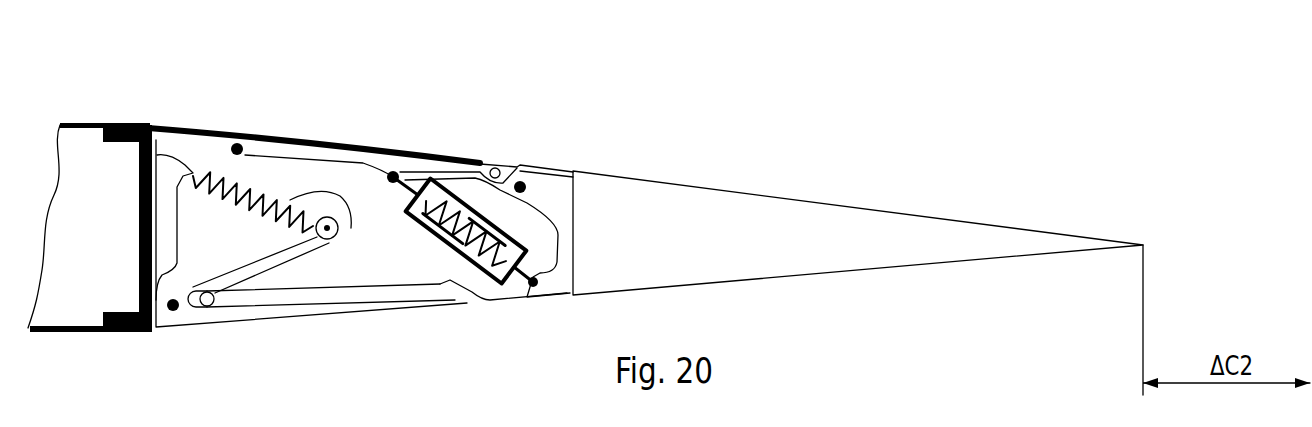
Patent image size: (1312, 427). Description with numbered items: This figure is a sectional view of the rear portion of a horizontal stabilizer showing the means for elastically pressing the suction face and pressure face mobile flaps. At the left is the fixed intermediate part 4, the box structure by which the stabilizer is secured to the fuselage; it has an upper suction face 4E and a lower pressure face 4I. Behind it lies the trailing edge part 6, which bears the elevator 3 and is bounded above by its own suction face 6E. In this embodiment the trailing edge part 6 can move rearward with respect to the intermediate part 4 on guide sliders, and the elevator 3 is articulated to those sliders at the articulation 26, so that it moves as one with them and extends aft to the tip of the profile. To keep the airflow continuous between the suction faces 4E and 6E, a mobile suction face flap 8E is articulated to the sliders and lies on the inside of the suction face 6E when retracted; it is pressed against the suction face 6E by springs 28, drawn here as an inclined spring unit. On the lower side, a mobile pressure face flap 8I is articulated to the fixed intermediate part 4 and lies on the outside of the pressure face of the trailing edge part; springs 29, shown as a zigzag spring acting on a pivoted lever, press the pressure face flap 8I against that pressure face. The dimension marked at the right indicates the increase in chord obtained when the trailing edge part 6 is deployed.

The elevator 3 is at (902, 227).
The intermediate part 4 is at (63, 293).
The suction face of the intermediate part 4E is at (83, 123).
The pressure face of the intermediate part 4I is at (82, 333).
The trailing edge part 6 is at (568, 114).
The suction face of the trailing edge part 6E is at (306, 150).
The mobile suction face flap 8E is at (377, 167).
The mobile pressure face flap 8I is at (250, 313).
The articulation of the elevators 26 is at (520, 181).
The springs pressing the suction face flap 28 is at (477, 253).
The springs pressing the pressure face flap 29 is at (345, 218).